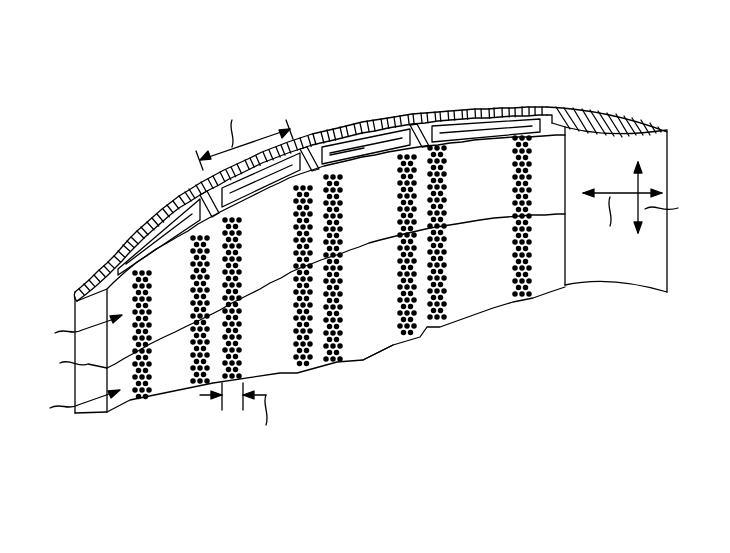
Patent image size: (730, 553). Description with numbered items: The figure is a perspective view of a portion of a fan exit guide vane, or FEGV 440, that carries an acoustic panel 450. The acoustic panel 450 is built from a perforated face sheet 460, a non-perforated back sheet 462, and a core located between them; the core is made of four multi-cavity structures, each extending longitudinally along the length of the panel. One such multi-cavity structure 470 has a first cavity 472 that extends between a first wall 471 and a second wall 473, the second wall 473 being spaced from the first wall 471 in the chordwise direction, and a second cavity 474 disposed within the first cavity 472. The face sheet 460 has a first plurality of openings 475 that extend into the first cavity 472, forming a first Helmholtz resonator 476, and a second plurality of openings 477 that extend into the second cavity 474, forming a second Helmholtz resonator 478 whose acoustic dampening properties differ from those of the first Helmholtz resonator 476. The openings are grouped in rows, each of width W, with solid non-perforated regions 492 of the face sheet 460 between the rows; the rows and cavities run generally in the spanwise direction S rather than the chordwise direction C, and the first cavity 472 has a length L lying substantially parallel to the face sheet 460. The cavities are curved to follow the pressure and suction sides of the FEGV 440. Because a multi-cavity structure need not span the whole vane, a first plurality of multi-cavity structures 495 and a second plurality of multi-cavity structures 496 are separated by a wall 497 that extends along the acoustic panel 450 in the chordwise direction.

The FEGV 440 is at (163, 86).
The acoustic panel 450 is at (320, 319).
The face sheet 460 is at (550, 290).
The back sheet 462 is at (539, 117).
The multi-cavity structure 470 is at (312, 120).
The first wall 471 is at (310, 150).
The first cavity 472 is at (340, 141).
The second wall 473 is at (423, 126).
The second cavity 474 is at (377, 141).
The first plurality of openings 475 is at (337, 362).
The first Helmholtz resonator 476 is at (333, 158).
The second plurality of openings 477 is at (415, 341).
The second Helmholtz resonator 478 is at (370, 148).
The non-perforated regions 492 is at (375, 341).
The first plurality of multi-cavity structures 495 is at (71, 331).
The second plurality of multi-cavity structures 496 is at (67, 405).
The wall 497 is at (66, 366).